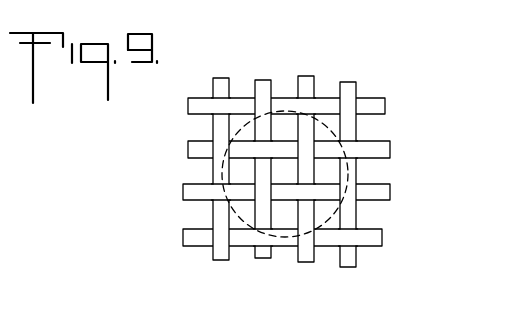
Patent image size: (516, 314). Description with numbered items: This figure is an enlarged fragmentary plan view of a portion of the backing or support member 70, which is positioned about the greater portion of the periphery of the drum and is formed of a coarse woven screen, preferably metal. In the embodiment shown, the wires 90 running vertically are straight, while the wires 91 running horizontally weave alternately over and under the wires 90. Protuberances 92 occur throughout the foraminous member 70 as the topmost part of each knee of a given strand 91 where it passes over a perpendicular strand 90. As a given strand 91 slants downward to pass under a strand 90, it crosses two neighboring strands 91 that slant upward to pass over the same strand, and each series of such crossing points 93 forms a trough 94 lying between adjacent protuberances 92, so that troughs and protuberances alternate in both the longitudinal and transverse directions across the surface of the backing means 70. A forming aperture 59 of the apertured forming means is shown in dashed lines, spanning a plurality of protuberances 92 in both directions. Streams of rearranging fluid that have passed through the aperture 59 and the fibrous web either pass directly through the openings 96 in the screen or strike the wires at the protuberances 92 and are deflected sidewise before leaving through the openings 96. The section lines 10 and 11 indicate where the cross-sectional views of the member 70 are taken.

The backing or support member 70 is at (291, 158).
The forming aperture 59 is at (330, 132).
The protuberances 92 is at (266, 150).
The crossing points 93 is at (287, 150).
The trough 94 is at (283, 192).
The openings 96 is at (247, 168).
The wires 90 is at (336, 257).
The wires 91 is at (377, 188).
The section line 10- 10 is at (170, 172).
The section line 11- 11 is at (308, 45).